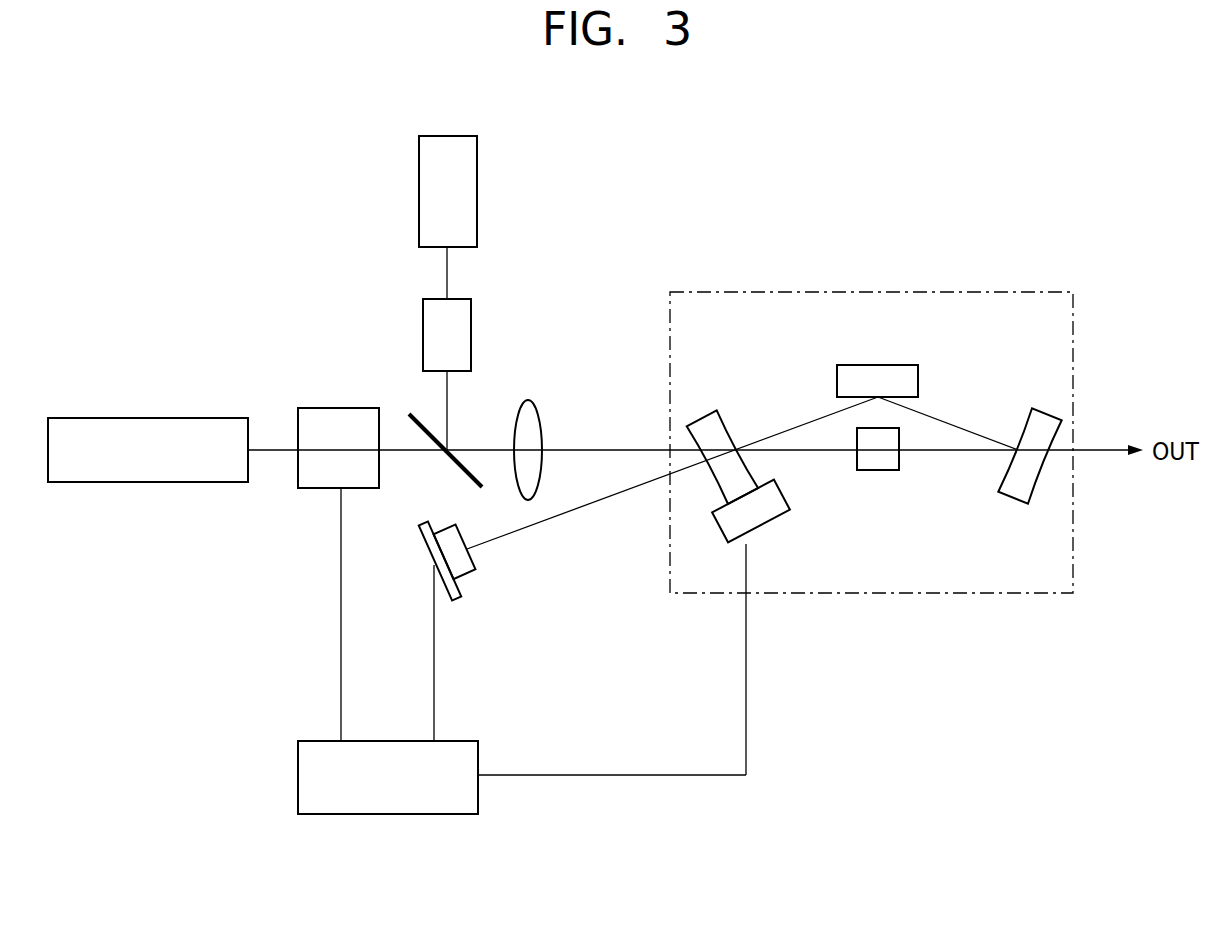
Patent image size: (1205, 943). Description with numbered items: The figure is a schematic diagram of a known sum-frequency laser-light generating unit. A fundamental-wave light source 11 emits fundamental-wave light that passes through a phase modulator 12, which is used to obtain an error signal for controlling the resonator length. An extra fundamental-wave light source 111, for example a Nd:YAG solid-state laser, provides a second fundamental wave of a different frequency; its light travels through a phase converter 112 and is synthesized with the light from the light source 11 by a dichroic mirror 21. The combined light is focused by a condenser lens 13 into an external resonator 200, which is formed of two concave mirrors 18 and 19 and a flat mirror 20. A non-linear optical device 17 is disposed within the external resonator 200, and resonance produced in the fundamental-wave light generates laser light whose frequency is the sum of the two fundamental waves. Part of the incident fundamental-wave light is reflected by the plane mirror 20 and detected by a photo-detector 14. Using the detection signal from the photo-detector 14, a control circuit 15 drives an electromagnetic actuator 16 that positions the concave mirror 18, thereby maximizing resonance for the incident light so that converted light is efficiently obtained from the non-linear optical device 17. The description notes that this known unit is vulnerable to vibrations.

The fundamental-wave light source 11 is at (141, 418).
The phase modulator 12 is at (340, 408).
The extra fundamental-wave light source 111 is at (477, 180).
The phase converter 112 is at (471, 333).
The dichroic mirror 21 is at (462, 473).
The condenser lens 13 is at (543, 420).
The photo-detector 14 is at (470, 578).
The control circuit 15 is at (398, 815).
The electromagnetic actuator 16 is at (772, 520).
The non-linear optical device 17 is at (892, 472).
The concave mirror 18 is at (700, 410).
The concave mirror 19 is at (1025, 505).
The flat mirror 20 is at (918, 378).
The external resonator 200 is at (1073, 325).